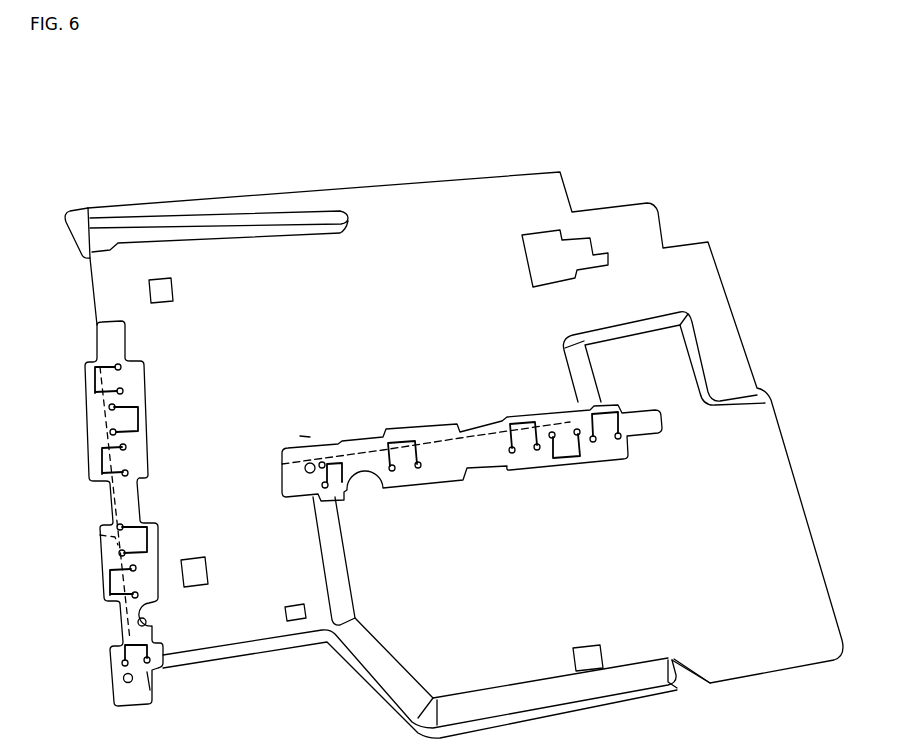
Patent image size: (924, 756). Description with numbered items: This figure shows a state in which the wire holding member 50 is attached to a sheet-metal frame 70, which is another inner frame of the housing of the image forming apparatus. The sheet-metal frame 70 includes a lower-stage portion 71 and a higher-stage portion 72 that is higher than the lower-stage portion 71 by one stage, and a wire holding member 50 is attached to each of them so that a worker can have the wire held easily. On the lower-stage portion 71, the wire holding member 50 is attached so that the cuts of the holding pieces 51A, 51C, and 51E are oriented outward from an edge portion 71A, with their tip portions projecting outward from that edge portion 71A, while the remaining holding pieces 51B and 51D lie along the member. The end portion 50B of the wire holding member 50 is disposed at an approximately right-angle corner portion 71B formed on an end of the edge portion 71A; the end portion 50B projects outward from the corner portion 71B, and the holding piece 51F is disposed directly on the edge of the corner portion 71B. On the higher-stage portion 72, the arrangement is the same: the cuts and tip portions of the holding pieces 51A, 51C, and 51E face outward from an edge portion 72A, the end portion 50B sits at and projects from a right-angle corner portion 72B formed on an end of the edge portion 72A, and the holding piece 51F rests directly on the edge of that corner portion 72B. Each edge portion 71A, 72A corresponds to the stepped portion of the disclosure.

The sheet-metal frame 70 is at (334, 140).
The lower-stage portion 71 is at (452, 233).
The edge portion 71A is at (90, 544).
The corner portion 71B is at (148, 678).
The higher-stage portion 72 is at (365, 582).
The edge portion 72A is at (443, 442).
The corner portion 72B is at (305, 440).
The wire holding member 50 is at (145, 348).
The end portion 50B is at (117, 666).
The holding piece 51A is at (95, 376).
The holding piece 51B is at (107, 416).
The holding piece 51C is at (100, 457).
The holding piece 51D is at (140, 535).
The holding piece 51E is at (108, 582).
The holding piece 51F is at (152, 637).